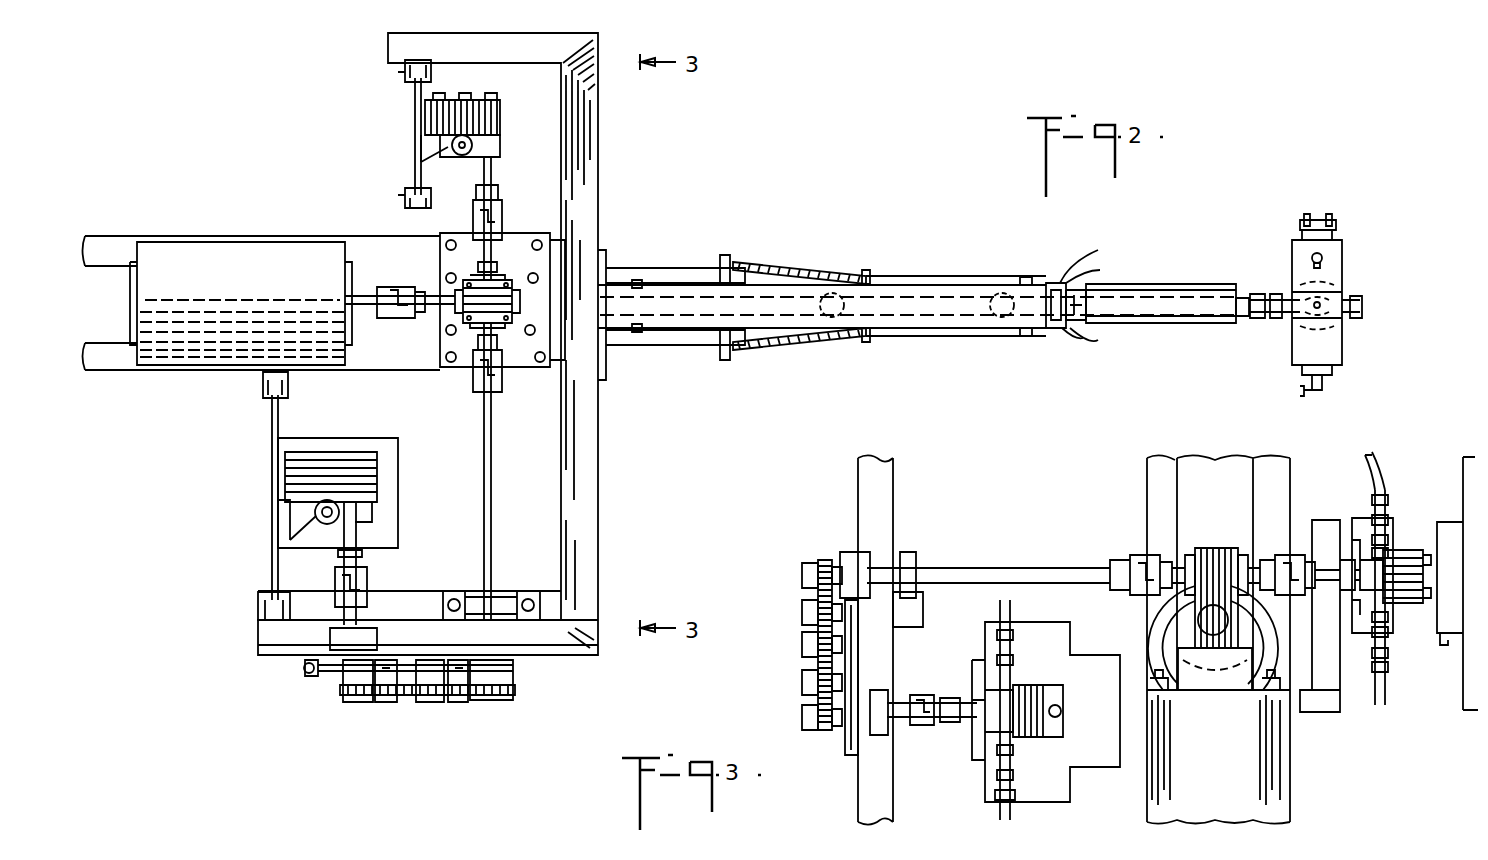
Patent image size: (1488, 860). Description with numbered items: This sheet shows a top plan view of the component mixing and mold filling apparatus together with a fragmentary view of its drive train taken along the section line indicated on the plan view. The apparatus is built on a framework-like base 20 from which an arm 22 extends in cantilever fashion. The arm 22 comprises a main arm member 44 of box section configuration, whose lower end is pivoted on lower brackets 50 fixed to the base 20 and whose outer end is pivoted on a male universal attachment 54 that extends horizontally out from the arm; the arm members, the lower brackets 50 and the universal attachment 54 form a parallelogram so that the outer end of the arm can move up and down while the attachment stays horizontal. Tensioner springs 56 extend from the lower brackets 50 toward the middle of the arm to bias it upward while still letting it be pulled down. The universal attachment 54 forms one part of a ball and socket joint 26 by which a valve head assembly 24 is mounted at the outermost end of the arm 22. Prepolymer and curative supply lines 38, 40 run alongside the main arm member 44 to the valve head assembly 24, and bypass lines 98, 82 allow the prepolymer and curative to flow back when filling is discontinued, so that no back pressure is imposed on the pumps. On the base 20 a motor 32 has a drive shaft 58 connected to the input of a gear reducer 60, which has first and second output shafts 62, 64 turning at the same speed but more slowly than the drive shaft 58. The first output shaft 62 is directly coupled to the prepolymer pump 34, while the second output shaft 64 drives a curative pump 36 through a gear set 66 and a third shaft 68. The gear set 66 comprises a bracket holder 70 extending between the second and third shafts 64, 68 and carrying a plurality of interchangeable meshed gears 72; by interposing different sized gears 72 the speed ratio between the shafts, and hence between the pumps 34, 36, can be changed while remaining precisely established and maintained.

In FIG. 2, the base 20 is at (590, 178).
In FIG. 3, the base 20 is at (858, 508).
In FIG. 2, the arm 22 is at (1024, 270).
In FIG. 2, the valve head assembly 24 is at (1372, 264).
In FIG. 2, the ball and socket joint 26 is at (1258, 318).
In FIG. 2, the motor 32 is at (240, 262).
In FIG. 3, the motor 32 is at (1165, 630).
In FIG. 2, the prepolymer pump 34 is at (497, 122).
In FIG. 3, the prepolymer pump 34 is at (1408, 550).
In FIG. 2, the curative pump 36 is at (352, 452).
In FIG. 3, the curative pump 36 is at (1045, 685).
In FIG. 2, the prepolymer supply line 38 is at (1060, 338).
In FIG. 3, the prepolymer supply line 38 is at (1405, 695).
In FIG. 2, the curative supply line 40 is at (1095, 265).
In FIG. 2, the main arm member 44 is at (960, 330).
In FIG. 2, the lower brackets 50 is at (655, 355).
In FIG. 2, the male universal attachment 54 is at (1178, 322).
In FIG. 2, the tensioner springs 56 is at (812, 372).
In FIG. 2, the drive shaft 58 is at (370, 282).
In FIG. 2, the gear reducer 60 is at (502, 285).
In FIG. 3, the gear reducer 60 is at (1213, 548).
In FIG. 2, the first output shaft 62 is at (495, 168).
In FIG. 3, the first output shaft 62 is at (1328, 540).
In FIG. 2, the second output shaft 64 is at (492, 518).
In FIG. 3, the second output shaft 64 is at (1025, 568).
In FIG. 2, the gear set 66 is at (407, 712).
In FIG. 3, the gear set 66 is at (780, 645).
In FIG. 2, the third shaft 68 is at (358, 535).
In FIG. 3, the third shaft 68 is at (945, 695).
In FIG. 2, the bracket holder 70 is at (320, 676).
In FIG. 3, the bracket holder 70 is at (850, 755).
In FIG. 2, the interchangeable meshed gears 72 is at (430, 705).
In FIG. 3, the interchangeable meshed gears 72 is at (785, 690).
In FIG. 2, the curative bypass line 82 is at (1090, 253).
In FIG. 2, the prepolymer bypass line 98 is at (1074, 342).